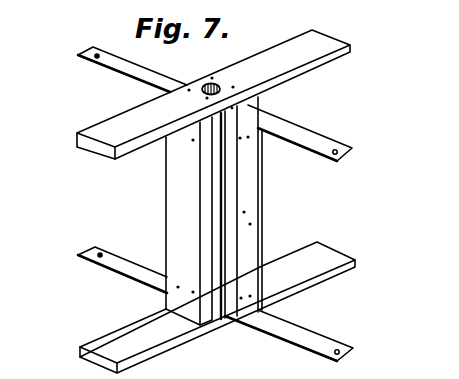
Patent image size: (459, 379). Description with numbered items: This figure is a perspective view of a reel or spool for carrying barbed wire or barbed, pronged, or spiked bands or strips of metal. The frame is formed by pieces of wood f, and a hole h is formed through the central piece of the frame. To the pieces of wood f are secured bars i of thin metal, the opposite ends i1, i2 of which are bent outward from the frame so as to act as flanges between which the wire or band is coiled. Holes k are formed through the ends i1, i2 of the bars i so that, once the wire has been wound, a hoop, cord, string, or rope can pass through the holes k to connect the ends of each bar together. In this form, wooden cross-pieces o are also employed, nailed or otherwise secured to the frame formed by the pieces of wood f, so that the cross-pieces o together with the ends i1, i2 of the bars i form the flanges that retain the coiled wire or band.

The cross-piece o is at (216, 201).
The hole h is at (219, 88).
The end of bar i1 is at (303, 128).
The end of bar i2 is at (302, 328).
The hole k is at (93, 58).
The piece of wood f is at (260, 180).
The bar i is at (232, 215).